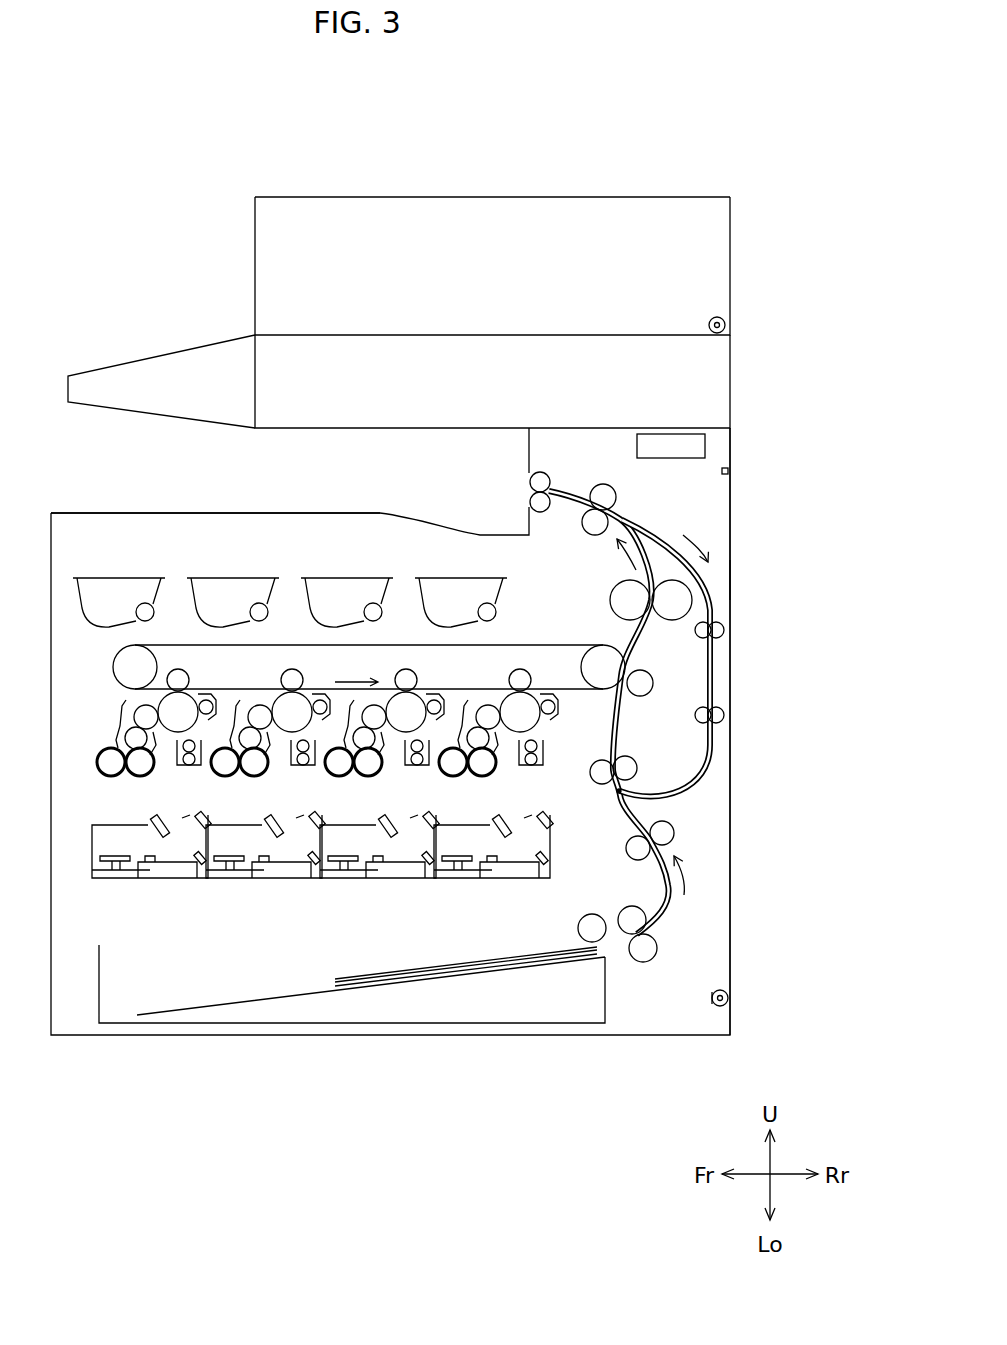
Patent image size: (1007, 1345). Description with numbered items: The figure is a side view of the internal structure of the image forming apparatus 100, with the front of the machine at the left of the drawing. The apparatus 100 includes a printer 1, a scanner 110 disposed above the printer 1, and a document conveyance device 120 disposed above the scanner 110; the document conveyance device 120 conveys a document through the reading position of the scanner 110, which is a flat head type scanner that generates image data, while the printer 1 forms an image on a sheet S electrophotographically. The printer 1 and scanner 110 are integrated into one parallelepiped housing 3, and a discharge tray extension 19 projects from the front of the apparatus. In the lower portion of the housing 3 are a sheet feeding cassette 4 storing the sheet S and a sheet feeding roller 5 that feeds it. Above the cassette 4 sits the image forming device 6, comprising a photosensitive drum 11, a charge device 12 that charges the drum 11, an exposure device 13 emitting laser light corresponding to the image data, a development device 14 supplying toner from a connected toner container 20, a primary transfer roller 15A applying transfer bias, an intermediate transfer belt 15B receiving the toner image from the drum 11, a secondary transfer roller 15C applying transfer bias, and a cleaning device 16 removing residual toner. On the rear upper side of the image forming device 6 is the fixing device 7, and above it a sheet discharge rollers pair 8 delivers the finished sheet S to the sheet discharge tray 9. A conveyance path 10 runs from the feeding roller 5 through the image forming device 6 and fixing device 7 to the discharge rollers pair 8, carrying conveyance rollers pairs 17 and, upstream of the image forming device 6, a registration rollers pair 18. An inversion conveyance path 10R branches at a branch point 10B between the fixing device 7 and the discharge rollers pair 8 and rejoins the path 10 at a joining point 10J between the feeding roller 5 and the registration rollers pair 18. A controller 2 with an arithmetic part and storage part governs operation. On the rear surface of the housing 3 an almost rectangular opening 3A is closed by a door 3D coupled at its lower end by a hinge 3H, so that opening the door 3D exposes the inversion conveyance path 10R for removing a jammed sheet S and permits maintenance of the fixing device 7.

The image forming apparatus 100 is at (755, 142).
The document conveyance device 120 is at (753, 258).
The scanner 110 is at (753, 380).
The printer 1 is at (792, 465).
The controller 2 is at (685, 462).
The housing 3 is at (731, 452).
The opening 3A is at (728, 472).
The door 3D is at (742, 576).
The hinge 3H is at (730, 1000).
The sheet feeding cassette 4 is at (607, 1003).
The sheet feeding roller 5 is at (578, 929).
The image forming device 6 is at (92, 640).
The fixing device 7 is at (671, 625).
The sheet discharge rollers pair 8 is at (552, 483).
The sheet discharge tray 9 is at (245, 513).
The conveyance path 10 is at (660, 895).
The branch point 10B is at (606, 537).
The joining point 10J is at (618, 790).
The inversion conveyance path 10R is at (714, 682).
The photosensitive drum 11 is at (549, 725).
The charge device 12 is at (543, 765).
The exposure device 13 is at (482, 823).
The development device 14 is at (477, 776).
The primary transfer roller 15A is at (521, 677).
The intermediate transfer belt 15B is at (545, 645).
The secondary transfer roller 15C is at (643, 697).
The cleaning device 16 is at (561, 698).
The conveyance rollers pairs 17 is at (618, 496).
The registration rollers pair 18 is at (637, 764).
The discharge tray extension 19 is at (143, 361).
The toner container 20 is at (504, 592).
The sheet S is at (350, 973).